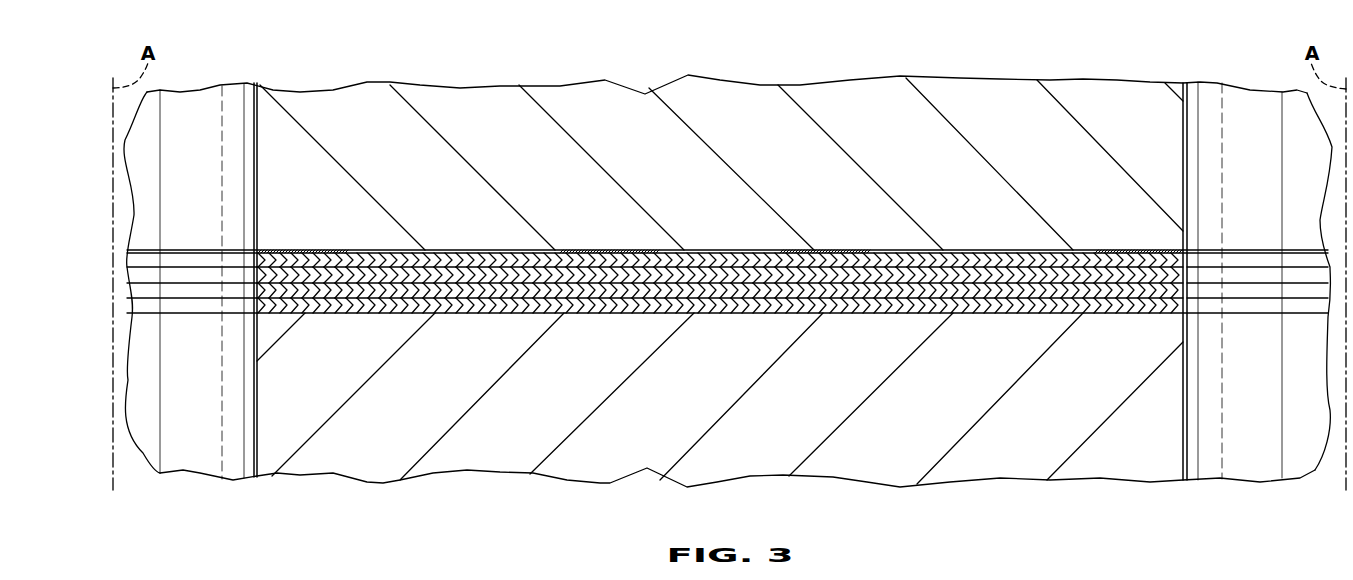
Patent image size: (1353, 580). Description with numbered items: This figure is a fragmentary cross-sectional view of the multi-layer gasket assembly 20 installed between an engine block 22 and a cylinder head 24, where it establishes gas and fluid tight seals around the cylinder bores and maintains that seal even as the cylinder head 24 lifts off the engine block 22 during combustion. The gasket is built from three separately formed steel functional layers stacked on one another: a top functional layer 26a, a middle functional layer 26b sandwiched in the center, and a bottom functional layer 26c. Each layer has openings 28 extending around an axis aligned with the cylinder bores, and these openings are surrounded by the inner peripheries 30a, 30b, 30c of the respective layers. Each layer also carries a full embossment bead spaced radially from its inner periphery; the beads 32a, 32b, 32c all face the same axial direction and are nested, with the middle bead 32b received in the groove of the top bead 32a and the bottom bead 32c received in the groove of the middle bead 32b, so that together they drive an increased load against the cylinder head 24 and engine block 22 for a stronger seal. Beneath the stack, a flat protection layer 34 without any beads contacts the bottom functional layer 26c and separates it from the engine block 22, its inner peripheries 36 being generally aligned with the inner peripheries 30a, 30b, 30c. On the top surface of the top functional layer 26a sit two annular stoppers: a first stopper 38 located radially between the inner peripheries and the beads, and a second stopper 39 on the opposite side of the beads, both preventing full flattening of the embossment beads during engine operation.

The multi-layer gasket assembly 20 is at (912, 195).
The engine block 22 is at (748, 433).
The cylinder head 24 is at (748, 134).
The top functional layer 26a is at (693, 262).
The middle functional layer 26b is at (710, 272).
The bottom functional layer 26c is at (696, 315).
The openings 28 is at (186, 290).
The inner periphery of the top functional layer 30a is at (256, 260).
The inner periphery of the middle functional layer 30b is at (256, 273).
The inner periphery of the bottom functional layer 30c is at (256, 292).
The full embossment bead of the top functional layer 32a is at (455, 258).
The full embossment bead of the middle functional layer 32b is at (443, 266).
The full embossment bead of the bottom functional layer 32c is at (462, 291).
The protection layer 34 is at (566, 315).
The inner peripheries of the protection layer 36 is at (253, 303).
The first stopper 38 is at (300, 250).
The second stopper 39 is at (613, 250).